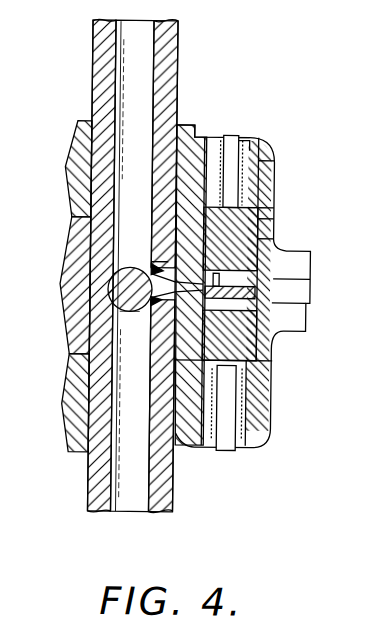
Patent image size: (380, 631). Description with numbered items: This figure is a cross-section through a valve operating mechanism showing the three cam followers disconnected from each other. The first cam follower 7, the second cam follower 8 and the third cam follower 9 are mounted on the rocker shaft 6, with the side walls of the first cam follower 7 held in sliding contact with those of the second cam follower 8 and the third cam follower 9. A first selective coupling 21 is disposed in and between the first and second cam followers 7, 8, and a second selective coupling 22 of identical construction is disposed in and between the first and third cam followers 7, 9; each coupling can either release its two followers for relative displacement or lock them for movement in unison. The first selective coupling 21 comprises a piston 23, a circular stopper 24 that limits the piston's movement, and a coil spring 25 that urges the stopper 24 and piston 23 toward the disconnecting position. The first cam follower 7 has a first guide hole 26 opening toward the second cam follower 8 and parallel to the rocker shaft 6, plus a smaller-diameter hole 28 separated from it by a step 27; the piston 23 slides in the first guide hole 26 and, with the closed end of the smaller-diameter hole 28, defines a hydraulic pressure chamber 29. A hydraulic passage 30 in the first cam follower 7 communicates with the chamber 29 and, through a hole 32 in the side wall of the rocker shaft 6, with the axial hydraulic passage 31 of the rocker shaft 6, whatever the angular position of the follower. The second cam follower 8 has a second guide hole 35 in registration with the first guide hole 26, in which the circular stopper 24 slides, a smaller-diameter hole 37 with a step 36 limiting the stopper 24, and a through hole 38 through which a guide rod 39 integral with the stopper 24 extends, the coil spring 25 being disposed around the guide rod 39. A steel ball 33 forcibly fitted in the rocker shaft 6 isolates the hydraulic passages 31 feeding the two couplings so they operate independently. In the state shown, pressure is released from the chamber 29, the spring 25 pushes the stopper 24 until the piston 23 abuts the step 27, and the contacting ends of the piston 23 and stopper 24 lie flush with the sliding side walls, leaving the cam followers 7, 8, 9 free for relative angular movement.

The rocker shaft 6 is at (89, 489).
The first cam follower 7 is at (63, 266).
The second cam follower 8 is at (69, 150).
The third cam follower 9 is at (66, 384).
The first selective coupling 21 is at (251, 126).
The second selective coupling 22 is at (240, 449).
The piston 23 is at (230, 239).
The circular stopper 24 is at (260, 214).
The coil spring 25 is at (242, 287).
The first guide hole 26 is at (268, 237).
The step 27 is at (258, 263).
The smaller-diameter hole 28 is at (232, 304).
The hydraulic pressure chamber 29 is at (217, 278).
The hydraulic passage 30 is at (130, 289).
The hydraulic passage 31 is at (152, 38).
The hole 32 is at (165, 252).
The steel ball 33 is at (133, 313).
The second guide hole 35 is at (187, 291).
The step 36 is at (262, 190).
The smaller-diameter hole 37 is at (262, 166).
The through hole 38 is at (252, 142).
The guide rod 39 is at (224, 135).